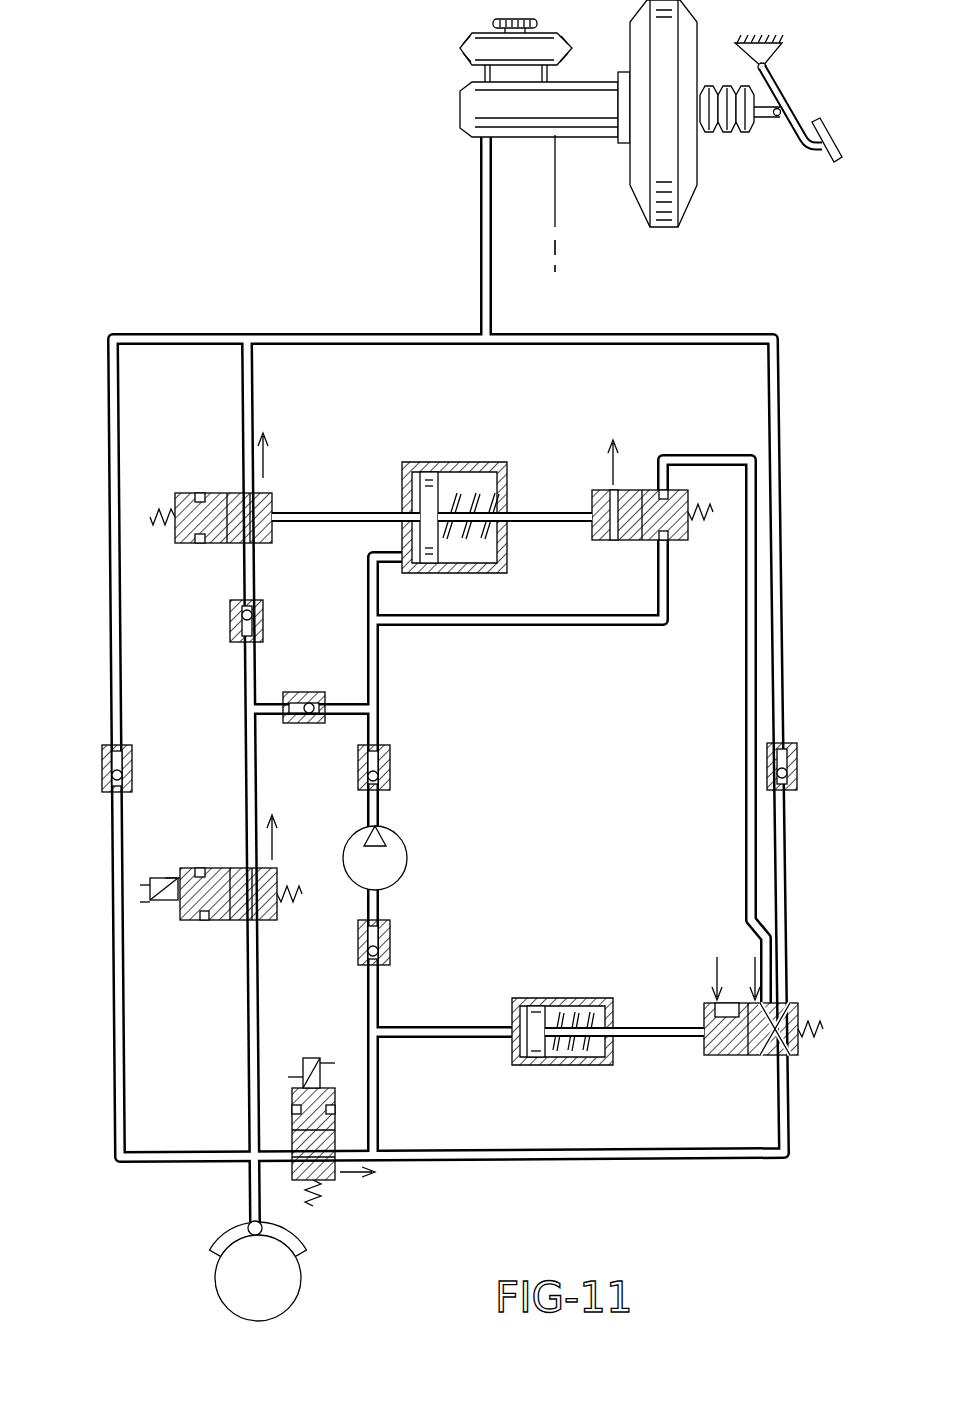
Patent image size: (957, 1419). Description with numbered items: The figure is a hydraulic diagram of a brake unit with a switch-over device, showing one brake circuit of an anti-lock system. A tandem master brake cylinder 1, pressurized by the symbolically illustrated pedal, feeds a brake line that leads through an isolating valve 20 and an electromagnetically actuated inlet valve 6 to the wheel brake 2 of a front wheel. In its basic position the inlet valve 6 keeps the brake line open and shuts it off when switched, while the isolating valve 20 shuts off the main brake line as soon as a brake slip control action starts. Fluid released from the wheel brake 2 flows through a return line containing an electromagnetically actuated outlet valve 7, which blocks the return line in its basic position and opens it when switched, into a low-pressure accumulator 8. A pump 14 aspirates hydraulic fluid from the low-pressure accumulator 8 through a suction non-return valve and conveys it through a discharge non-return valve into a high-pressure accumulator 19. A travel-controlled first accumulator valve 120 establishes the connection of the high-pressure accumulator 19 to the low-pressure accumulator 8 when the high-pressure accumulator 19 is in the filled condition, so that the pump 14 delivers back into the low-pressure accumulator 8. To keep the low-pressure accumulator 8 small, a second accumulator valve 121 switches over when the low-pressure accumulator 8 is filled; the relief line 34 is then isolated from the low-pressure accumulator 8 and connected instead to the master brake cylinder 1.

The tandem master brake cylinder 1 is at (460, 100).
The front wheel brake 2 is at (293, 1281).
The inlet valve 6 is at (190, 868).
The outlet valve 7 is at (335, 1095).
The low-pressure accumulator 8 is at (548, 998).
The pump 14 is at (390, 840).
The high-pressure accumulator 19 is at (507, 486).
The isolating valve 20 is at (178, 493).
The relief line 34 is at (745, 612).
The first accumulator valve 120 is at (632, 540).
The second accumulator valve 121 is at (758, 1055).